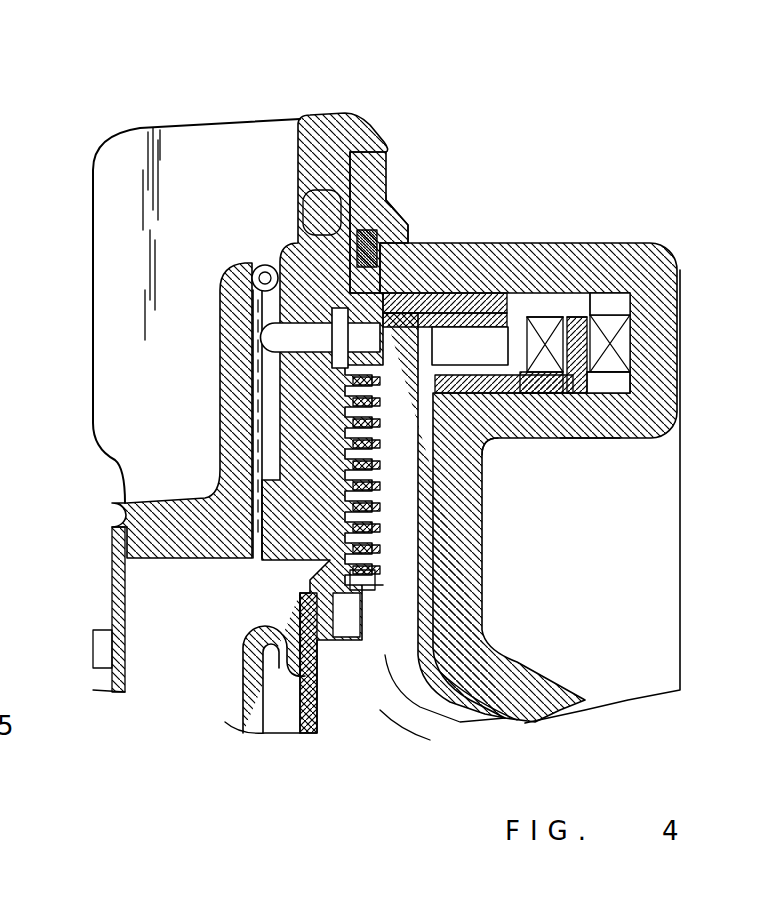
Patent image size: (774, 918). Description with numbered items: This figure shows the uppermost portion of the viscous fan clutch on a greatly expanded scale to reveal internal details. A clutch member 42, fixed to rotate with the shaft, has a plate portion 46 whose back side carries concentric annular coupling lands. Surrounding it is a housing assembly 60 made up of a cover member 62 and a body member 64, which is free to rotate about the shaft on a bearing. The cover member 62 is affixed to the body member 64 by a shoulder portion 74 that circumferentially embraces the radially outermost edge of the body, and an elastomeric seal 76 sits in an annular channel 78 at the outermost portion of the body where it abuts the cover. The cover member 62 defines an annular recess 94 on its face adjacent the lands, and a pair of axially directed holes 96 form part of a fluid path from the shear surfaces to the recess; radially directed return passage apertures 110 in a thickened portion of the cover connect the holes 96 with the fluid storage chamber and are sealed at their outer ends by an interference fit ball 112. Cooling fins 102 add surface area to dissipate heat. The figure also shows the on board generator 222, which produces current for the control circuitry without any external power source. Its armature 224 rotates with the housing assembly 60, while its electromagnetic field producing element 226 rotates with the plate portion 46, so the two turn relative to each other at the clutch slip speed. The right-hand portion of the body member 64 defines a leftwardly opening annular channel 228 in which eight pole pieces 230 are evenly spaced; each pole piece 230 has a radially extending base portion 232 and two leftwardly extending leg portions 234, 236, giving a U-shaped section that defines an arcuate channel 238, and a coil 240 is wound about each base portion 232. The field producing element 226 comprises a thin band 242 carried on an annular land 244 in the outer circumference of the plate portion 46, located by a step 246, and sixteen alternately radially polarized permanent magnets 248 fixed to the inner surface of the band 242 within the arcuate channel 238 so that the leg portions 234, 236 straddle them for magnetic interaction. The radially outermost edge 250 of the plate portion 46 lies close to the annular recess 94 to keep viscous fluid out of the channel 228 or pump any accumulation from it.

The clutch member 42 is at (414, 702).
The plate portion 46 is at (412, 548).
The housing assembly 60 is at (315, 108).
The cover member 62 is at (187, 153).
The body member 64 is at (397, 203).
The shoulder portion 74 is at (388, 153).
The elastomeric seal 76 is at (401, 226).
The annular channel 78 is at (328, 228).
The annular recess 94 is at (222, 300).
The axially directed holes 96 is at (267, 340).
The cooling fins 102 is at (118, 320).
The return passage apertures 110 is at (265, 425).
The interference fit ball 112 is at (255, 262).
The on board generator 222 is at (589, 178).
The armature 224 is at (645, 355).
The electromagnetic field producing element 226 is at (485, 378).
The annular channel 228 is at (618, 382).
The pole pieces 230 is at (583, 295).
The base portion 232 is at (587, 440).
The leg portion 234 is at (527, 315).
The leg portion 236 is at (547, 400).
The arcuate channel 238 is at (581, 317).
The coil 240 is at (620, 340).
The band 242 is at (465, 316).
The annular land 244 is at (428, 418).
The step 246 is at (397, 300).
The permanent magnets 248 is at (510, 345).
The radially outermost circumferential edge 250 is at (335, 306).